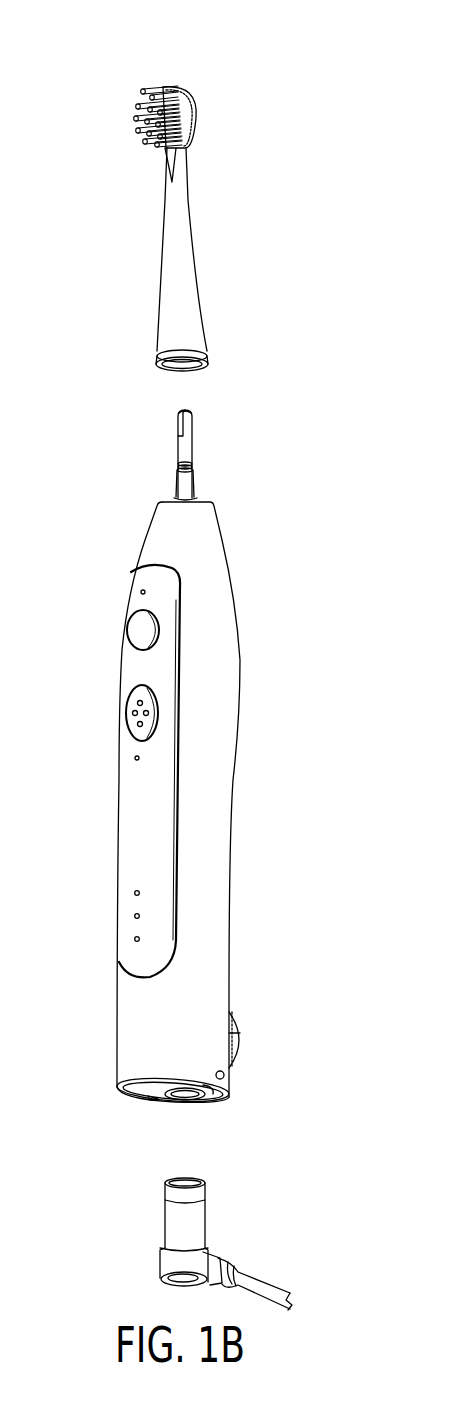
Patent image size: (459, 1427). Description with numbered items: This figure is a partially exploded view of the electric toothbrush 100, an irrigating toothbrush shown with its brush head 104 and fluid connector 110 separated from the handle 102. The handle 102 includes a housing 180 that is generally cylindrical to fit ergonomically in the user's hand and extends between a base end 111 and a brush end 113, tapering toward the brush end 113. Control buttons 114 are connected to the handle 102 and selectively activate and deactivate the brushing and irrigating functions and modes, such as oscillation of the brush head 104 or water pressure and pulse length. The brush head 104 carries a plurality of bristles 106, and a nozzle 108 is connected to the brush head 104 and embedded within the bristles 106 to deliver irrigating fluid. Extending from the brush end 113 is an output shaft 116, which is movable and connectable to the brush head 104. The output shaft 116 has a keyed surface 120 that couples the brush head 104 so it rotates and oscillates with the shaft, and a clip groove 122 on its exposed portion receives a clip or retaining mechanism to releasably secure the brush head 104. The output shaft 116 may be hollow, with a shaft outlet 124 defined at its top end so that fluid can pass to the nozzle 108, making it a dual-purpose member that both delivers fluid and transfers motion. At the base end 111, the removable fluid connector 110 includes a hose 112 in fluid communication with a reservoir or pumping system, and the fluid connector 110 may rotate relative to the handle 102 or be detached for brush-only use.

The electric toothbrush 100 is at (236, 272).
The handle 102 is at (231, 864).
The brush head 104 is at (190, 214).
The bristles 106 is at (163, 90).
The nozzle 108 is at (150, 104).
The fluid connector 110 is at (165, 1228).
The base end 111 is at (142, 1090).
The hose 112 is at (250, 1275).
The brush end 113 is at (205, 532).
The control buttons 114 is at (136, 632).
The output shaft 116 is at (194, 448).
The keyed surface 120 is at (178, 425).
The clip groove 122 is at (178, 468).
The shaft outlet 124 is at (187, 411).
The housing 180 is at (207, 978).